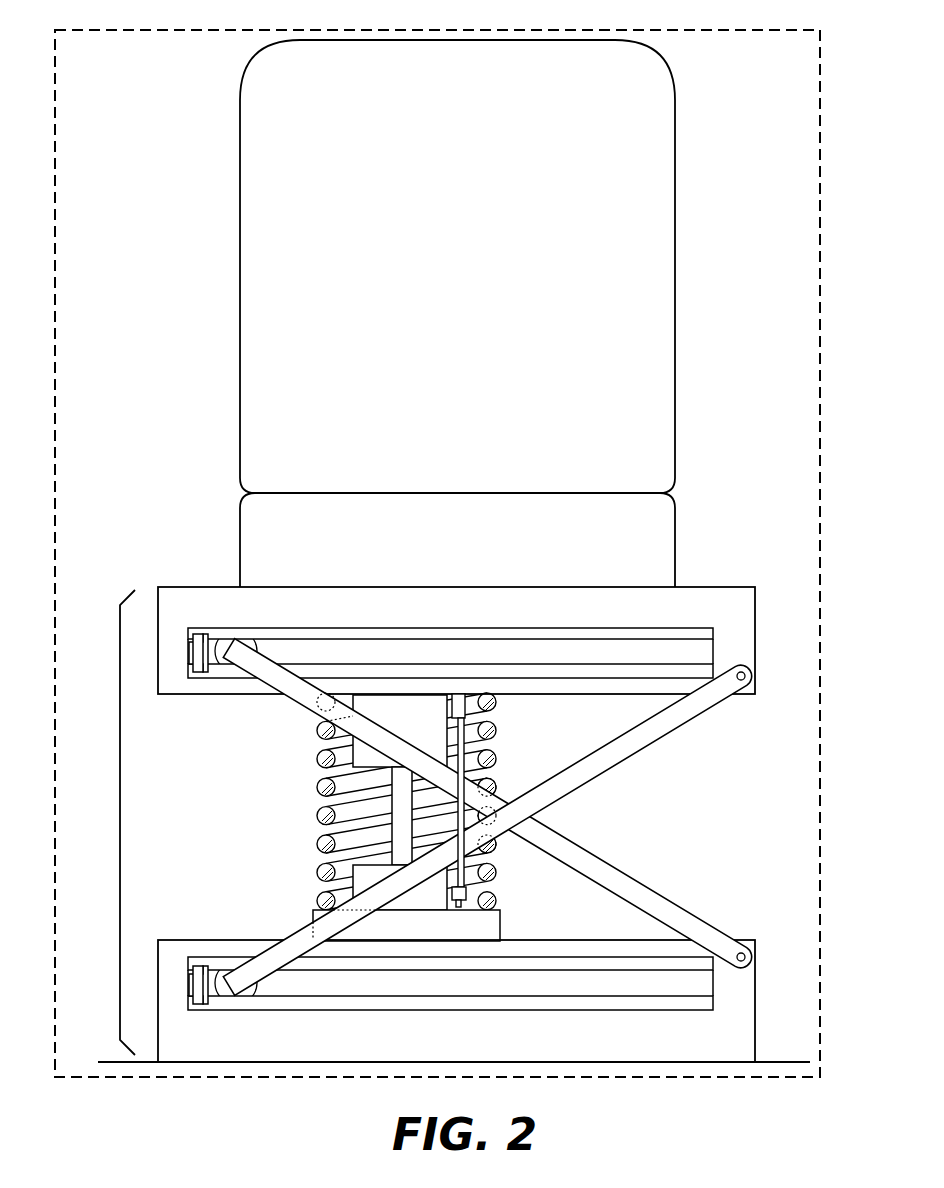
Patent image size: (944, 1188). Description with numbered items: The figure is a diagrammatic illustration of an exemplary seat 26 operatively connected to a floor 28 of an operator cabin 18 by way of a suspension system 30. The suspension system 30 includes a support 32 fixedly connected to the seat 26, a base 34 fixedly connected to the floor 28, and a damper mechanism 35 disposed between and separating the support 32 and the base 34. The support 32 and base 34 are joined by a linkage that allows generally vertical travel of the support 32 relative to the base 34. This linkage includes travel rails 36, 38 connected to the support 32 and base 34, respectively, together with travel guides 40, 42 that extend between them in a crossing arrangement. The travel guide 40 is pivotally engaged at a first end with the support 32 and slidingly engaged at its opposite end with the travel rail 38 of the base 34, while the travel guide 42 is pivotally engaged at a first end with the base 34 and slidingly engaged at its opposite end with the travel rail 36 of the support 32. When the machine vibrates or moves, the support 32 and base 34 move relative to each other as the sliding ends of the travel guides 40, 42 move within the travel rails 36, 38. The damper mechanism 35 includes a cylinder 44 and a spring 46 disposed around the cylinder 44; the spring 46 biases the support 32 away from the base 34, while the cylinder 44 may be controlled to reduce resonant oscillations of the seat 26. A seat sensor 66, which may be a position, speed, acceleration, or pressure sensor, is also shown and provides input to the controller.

The operator cabin 18 is at (58, 386).
The seat 26 is at (470, 278).
The floor 28 is at (765, 1060).
The suspension system 30 is at (122, 824).
The support 32 is at (172, 694).
The base 34 is at (167, 942).
The damper mechanism 35 is at (222, 843).
The travel rail 36 is at (698, 627).
The travel rail 38 is at (665, 1004).
The travel guide 40 is at (673, 722).
The travel guide 42 is at (666, 913).
The cylinder 44 is at (360, 753).
The spring 46 is at (330, 812).
The seat sensor 66 is at (492, 704).